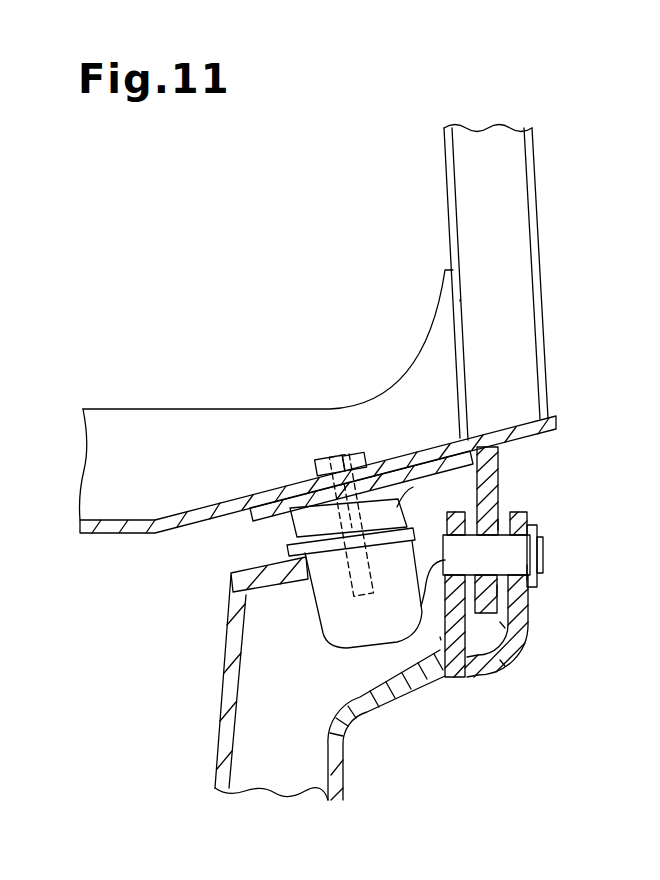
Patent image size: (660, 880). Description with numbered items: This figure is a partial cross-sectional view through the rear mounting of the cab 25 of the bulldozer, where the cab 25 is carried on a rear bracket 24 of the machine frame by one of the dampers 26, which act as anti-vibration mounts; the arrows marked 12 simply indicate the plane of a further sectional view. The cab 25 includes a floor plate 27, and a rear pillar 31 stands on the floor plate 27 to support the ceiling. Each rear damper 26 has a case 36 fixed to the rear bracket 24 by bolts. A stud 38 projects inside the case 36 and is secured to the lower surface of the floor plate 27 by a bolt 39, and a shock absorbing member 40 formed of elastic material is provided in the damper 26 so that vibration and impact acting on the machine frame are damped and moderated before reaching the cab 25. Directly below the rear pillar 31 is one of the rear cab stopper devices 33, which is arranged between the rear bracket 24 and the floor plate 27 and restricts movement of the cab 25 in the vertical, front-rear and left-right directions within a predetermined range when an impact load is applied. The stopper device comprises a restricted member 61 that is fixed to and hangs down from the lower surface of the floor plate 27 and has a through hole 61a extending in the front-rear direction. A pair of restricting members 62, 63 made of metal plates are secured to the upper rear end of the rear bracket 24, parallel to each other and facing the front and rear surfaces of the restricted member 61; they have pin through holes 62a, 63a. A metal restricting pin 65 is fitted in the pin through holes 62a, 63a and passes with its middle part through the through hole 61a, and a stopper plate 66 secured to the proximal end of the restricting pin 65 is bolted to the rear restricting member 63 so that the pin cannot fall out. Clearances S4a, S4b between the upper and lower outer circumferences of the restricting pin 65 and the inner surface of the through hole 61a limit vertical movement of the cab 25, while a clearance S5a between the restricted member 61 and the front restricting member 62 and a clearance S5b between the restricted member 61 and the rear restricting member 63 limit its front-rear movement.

The section line 12 is at (478, 338).
The rear bracket 24 is at (222, 740).
The cab 25 is at (540, 333).
The damper 26 is at (314, 618).
The floor plate 27 is at (93, 537).
The rear pillar 31 is at (527, 378).
The rear cab stopper device 33 is at (498, 663).
The case 36 is at (333, 650).
The stud 38 is at (358, 473).
The bolt 39 is at (325, 463).
The shock absorbing member 40 is at (403, 462).
The restricted member 61 is at (502, 455).
The through hole 61a is at (476, 520).
The restricting member 62 is at (453, 670).
The pin through hole 62a is at (418, 583).
The restricting member 63 is at (492, 667).
The pin through hole 63a is at (525, 573).
The restricting pin 65 is at (513, 552).
The stopper plate 66 is at (527, 530).
The clearance S4a is at (498, 523).
The clearance S4b is at (500, 585).
The clearance S5a is at (440, 637).
The clearance S5b is at (500, 625).